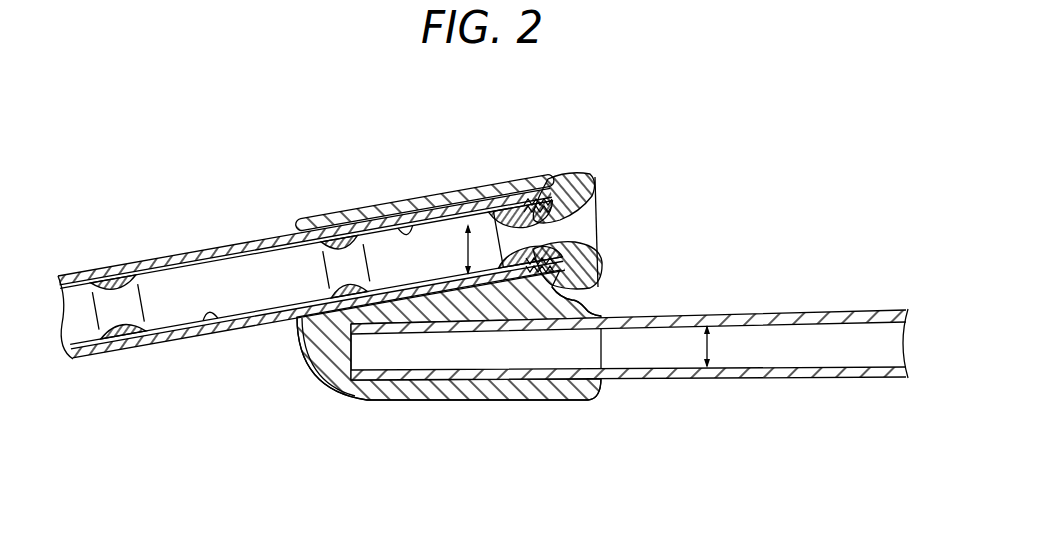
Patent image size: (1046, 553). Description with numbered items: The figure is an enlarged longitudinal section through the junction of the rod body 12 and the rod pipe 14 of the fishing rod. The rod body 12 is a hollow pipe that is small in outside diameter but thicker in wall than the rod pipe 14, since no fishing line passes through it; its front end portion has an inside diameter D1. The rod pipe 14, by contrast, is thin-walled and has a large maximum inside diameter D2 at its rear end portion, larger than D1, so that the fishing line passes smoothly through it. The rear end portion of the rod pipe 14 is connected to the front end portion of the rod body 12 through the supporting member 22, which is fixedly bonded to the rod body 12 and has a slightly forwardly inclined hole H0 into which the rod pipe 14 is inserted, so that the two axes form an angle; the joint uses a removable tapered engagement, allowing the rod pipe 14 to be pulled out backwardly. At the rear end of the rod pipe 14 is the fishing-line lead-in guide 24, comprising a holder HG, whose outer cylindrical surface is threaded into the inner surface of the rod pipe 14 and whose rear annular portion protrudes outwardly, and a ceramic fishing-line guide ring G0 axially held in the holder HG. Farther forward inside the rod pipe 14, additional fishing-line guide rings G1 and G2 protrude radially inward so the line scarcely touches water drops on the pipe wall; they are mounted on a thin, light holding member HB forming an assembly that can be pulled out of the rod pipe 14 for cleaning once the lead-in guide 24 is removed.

The rod body 12 is at (813, 378).
The rod pipe 14 is at (141, 345).
The supporting member 22 is at (388, 396).
The fishing-line lead-in guide 24 is at (712, 162).
The fishing-line guide ring G0 is at (562, 246).
The fishing-line guide ring G1 is at (325, 229).
The fishing-line guide ring G2 is at (113, 282).
The hole H0 is at (401, 222).
The holding member HB is at (207, 334).
The holder HG is at (572, 176).
The inside diameter D1 is at (687, 346).
The maximum inside diameter D2 is at (449, 249).